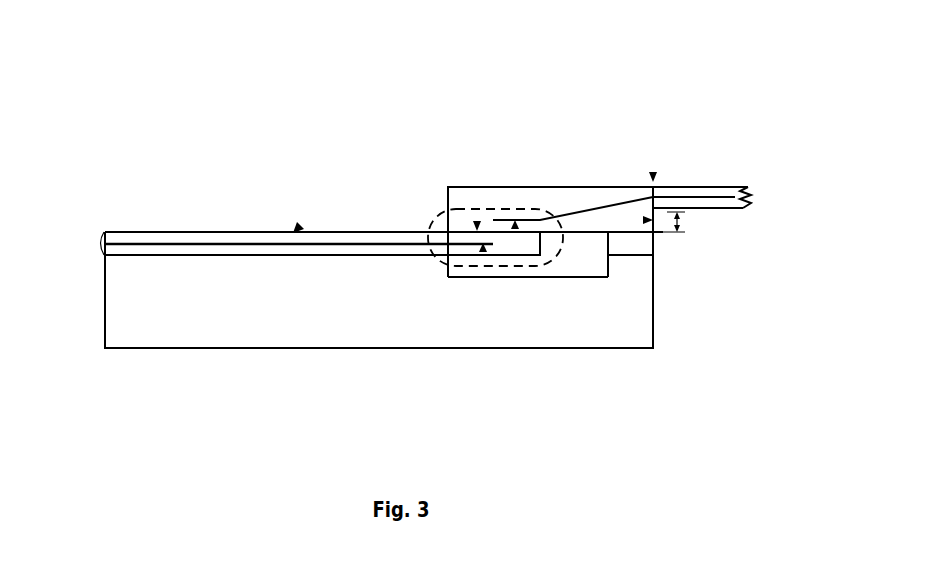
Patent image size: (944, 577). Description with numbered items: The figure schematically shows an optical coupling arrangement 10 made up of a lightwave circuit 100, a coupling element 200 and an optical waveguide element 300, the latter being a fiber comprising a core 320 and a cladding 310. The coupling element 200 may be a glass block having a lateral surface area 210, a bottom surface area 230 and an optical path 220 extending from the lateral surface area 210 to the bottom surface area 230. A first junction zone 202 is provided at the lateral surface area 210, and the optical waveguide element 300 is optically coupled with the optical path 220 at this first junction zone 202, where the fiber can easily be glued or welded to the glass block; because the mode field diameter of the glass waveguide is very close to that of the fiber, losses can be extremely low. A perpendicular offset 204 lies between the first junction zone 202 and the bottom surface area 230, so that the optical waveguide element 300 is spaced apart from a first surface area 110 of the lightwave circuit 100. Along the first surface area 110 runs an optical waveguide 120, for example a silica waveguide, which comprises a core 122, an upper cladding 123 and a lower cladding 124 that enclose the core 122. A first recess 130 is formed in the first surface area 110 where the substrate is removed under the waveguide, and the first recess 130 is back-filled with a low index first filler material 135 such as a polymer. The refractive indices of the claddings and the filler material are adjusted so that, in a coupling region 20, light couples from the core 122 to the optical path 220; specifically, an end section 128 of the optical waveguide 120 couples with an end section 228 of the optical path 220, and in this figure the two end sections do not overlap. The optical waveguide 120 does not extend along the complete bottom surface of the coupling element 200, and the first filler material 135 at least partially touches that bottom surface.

The optical coupling arrangement 10 is at (109, 92).
The coupling region 20 is at (428, 217).
The lightwave circuit 100 is at (190, 338).
The first surface area 110 is at (298, 226).
The optical waveguide 120 is at (100, 237).
The core 122 is at (153, 243).
The upper cladding 123 is at (200, 240).
The lower cladding 124 is at (240, 250).
The end section of the optical waveguide 128 is at (473, 268).
The first recess 130 is at (562, 274).
The first filler material 135 is at (600, 270).
The coupling element 200 is at (533, 198).
The first junction zone 202 is at (653, 173).
The perpendicular offset 204 is at (683, 231).
The lateral surface area 210 is at (643, 220).
The optical path 220 is at (582, 208).
The end section of the optical path 228 is at (505, 258).
The bottom surface area 230 is at (477, 221).
The optical waveguide element 300 is at (717, 187).
The cladding 310 is at (708, 209).
The core 320 is at (723, 209).